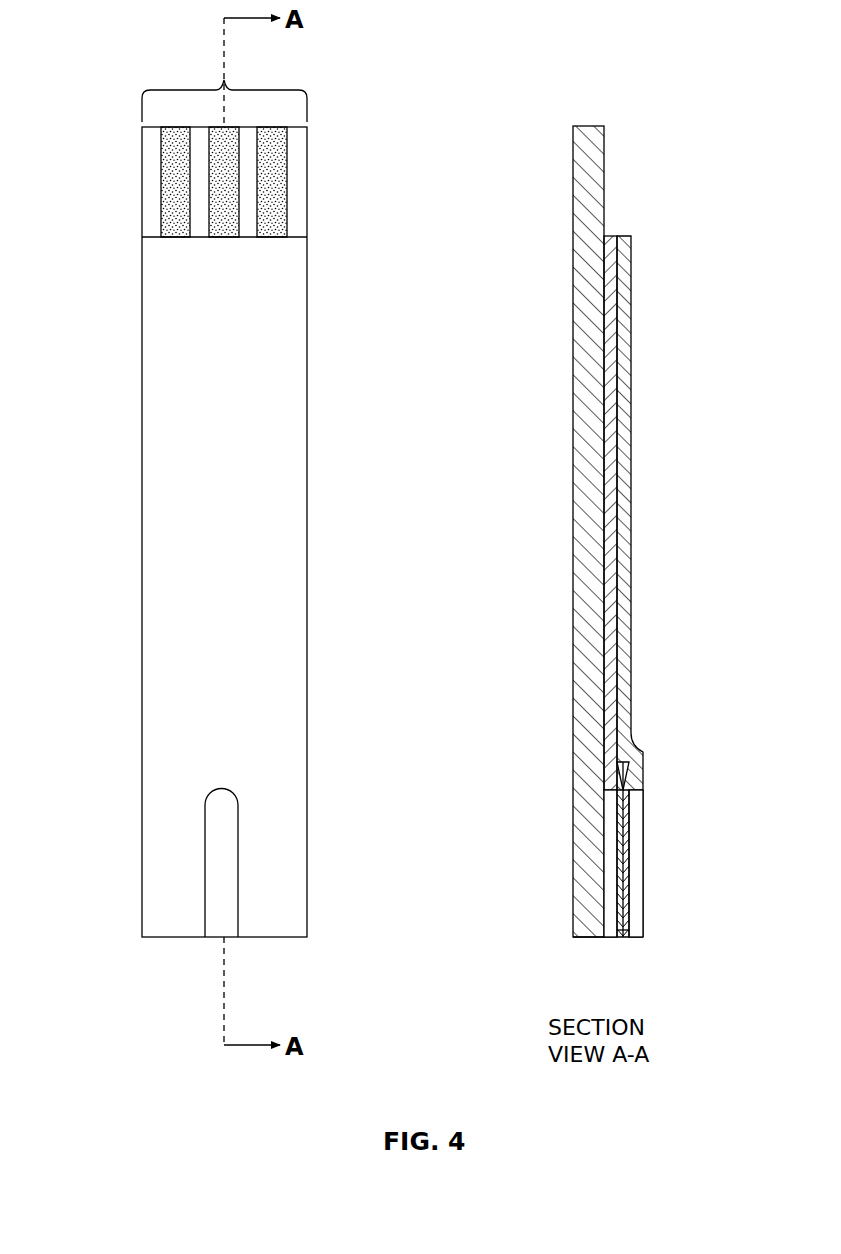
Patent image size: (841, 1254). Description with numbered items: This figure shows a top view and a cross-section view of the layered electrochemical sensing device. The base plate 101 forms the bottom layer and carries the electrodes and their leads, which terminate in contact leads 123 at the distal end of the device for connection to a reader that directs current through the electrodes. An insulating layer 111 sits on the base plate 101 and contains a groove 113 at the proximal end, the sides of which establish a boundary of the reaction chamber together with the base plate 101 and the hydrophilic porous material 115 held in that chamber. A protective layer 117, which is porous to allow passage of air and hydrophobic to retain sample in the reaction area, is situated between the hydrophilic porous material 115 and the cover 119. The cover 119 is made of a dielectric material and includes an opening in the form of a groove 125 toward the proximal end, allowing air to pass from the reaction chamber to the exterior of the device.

The base plate 101 is at (590, 265).
The insulating layer 111 is at (612, 365).
The cover 119 is at (162, 380).
The protective layer 117 is at (220, 893).
The contact leads 123 is at (224, 80).
The groove 125 is at (635, 818).
The groove 113 is at (606, 938).
The hydrophilic porous material 115 is at (620, 907).